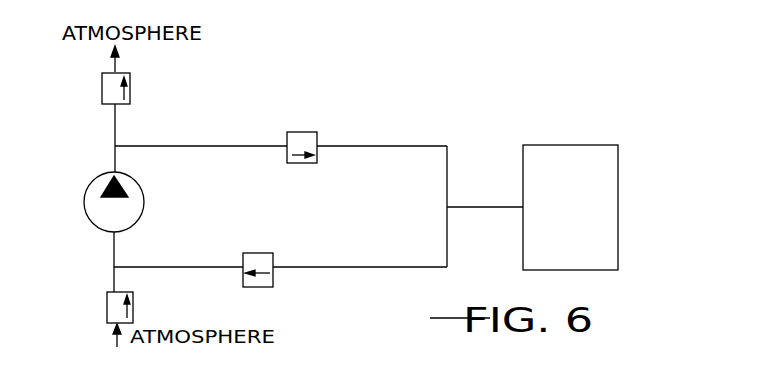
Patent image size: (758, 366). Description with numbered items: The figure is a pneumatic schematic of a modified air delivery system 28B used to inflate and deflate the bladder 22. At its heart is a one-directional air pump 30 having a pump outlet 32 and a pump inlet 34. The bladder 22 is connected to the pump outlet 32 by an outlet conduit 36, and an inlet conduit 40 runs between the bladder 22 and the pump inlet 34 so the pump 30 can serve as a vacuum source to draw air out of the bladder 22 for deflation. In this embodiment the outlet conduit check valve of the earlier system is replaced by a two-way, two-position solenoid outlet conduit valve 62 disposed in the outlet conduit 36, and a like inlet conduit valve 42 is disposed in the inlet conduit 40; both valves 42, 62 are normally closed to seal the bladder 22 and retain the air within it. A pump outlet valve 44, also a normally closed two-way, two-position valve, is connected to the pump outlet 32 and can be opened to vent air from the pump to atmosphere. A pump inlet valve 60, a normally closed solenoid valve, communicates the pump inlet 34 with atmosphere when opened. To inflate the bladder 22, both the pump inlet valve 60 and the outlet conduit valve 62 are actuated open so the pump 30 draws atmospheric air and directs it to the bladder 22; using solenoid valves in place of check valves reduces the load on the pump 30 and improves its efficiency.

The bladder 22 is at (560, 143).
The air delivery system 28B is at (402, 116).
The one-directional air pump 30 is at (85, 208).
The pump outlet 32 is at (113, 156).
The pump inlet 34 is at (113, 248).
The outlet conduit 36 is at (430, 143).
The inlet conduit 40 is at (183, 267).
The inlet conduit valve 42 is at (260, 253).
The pump outlet valve 44 is at (130, 100).
The pump inlet valve 60 is at (137, 313).
The outlet conduit valve 62 is at (300, 130).